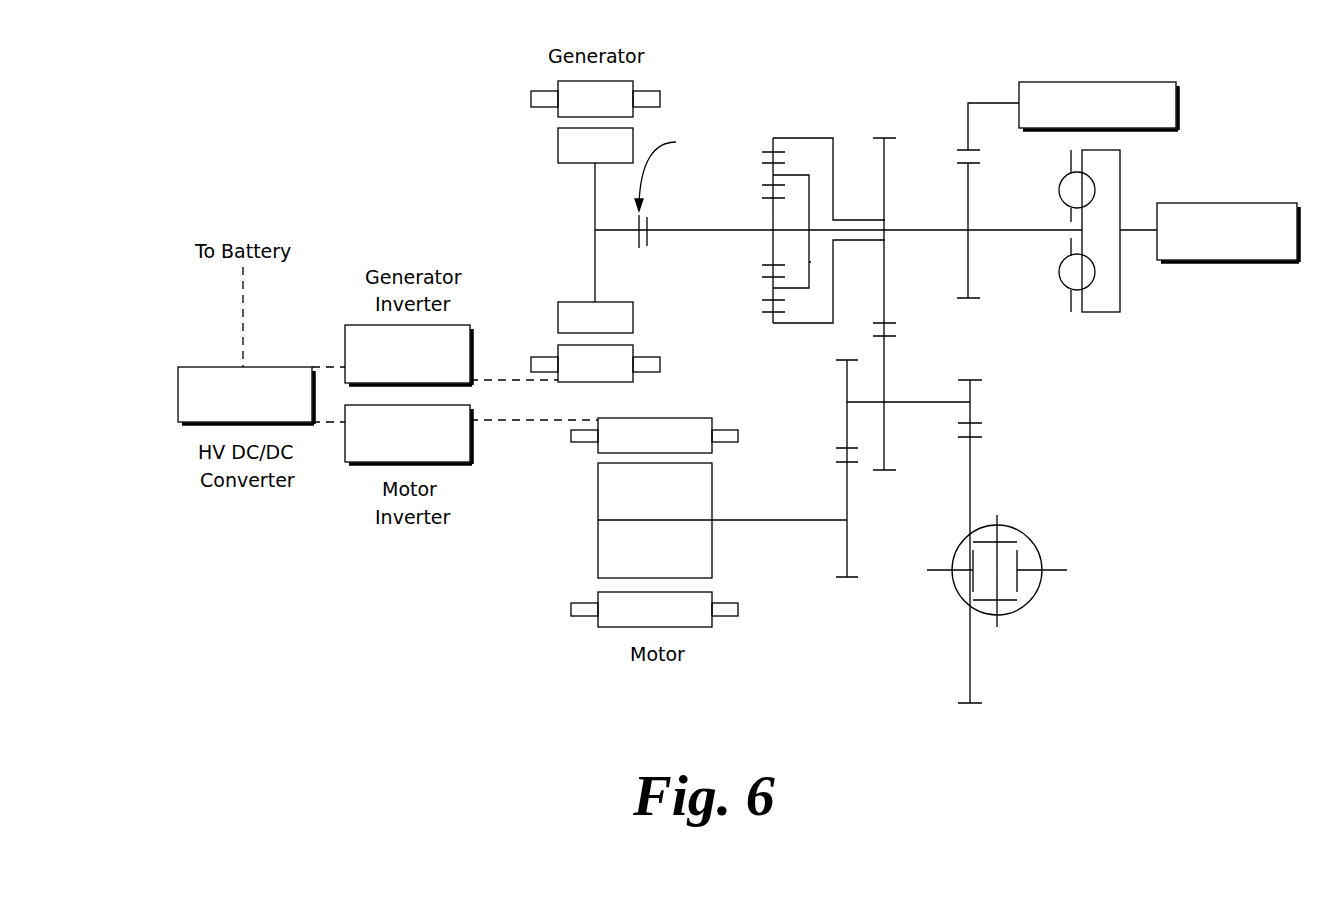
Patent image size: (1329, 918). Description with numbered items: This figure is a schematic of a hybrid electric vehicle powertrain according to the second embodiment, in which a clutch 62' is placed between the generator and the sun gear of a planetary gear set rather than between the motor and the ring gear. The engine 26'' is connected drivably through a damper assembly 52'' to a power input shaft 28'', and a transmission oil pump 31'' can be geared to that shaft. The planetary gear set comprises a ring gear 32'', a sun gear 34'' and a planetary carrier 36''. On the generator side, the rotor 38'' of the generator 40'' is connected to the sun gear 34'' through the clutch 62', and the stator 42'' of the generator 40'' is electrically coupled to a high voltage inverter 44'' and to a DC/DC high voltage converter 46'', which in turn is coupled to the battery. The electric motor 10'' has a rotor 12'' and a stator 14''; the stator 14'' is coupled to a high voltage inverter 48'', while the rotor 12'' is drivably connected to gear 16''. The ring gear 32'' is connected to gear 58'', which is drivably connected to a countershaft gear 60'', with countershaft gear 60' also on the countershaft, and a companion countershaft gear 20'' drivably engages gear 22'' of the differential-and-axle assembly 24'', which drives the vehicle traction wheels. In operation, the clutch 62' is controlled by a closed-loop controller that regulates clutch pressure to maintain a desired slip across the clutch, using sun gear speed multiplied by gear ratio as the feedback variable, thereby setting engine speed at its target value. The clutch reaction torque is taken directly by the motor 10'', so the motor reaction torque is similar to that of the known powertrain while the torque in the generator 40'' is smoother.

The electric motor 10'' is at (680, 585).
The rotor 12'' is at (722, 505).
The stator 14'' is at (654, 409).
The gear 16'' is at (872, 569).
The companion countershaft gear 20'' is at (945, 427).
The gear of differential-and-axle assembly 22'' is at (998, 625).
The differential-and-axle assembly 24'' is at (1046, 562).
The engine 26'' is at (1230, 207).
The power input shaft 28'' is at (876, 205).
The transmission oil pump 31'' is at (1071, 165).
The ring gear 32'' is at (823, 208).
The sun gear 34'' is at (754, 229).
The planetary carrier 36'' is at (843, 288).
The rotor of generator 38'' is at (566, 170).
The generator 40'' is at (580, 73).
The stator of generator 42'' is at (579, 337).
The high voltage inverter 44'' is at (378, 329).
The DC/DC high voltage converter 46'' is at (214, 381).
The high voltage inverter 48'' is at (443, 454).
The damper assembly 52'' is at (1143, 205).
The gear 58'' is at (914, 297).
The countershaft gear 60' is at (879, 508).
The countershaft gear 60'' is at (815, 401).
The clutch 62' is at (687, 220).